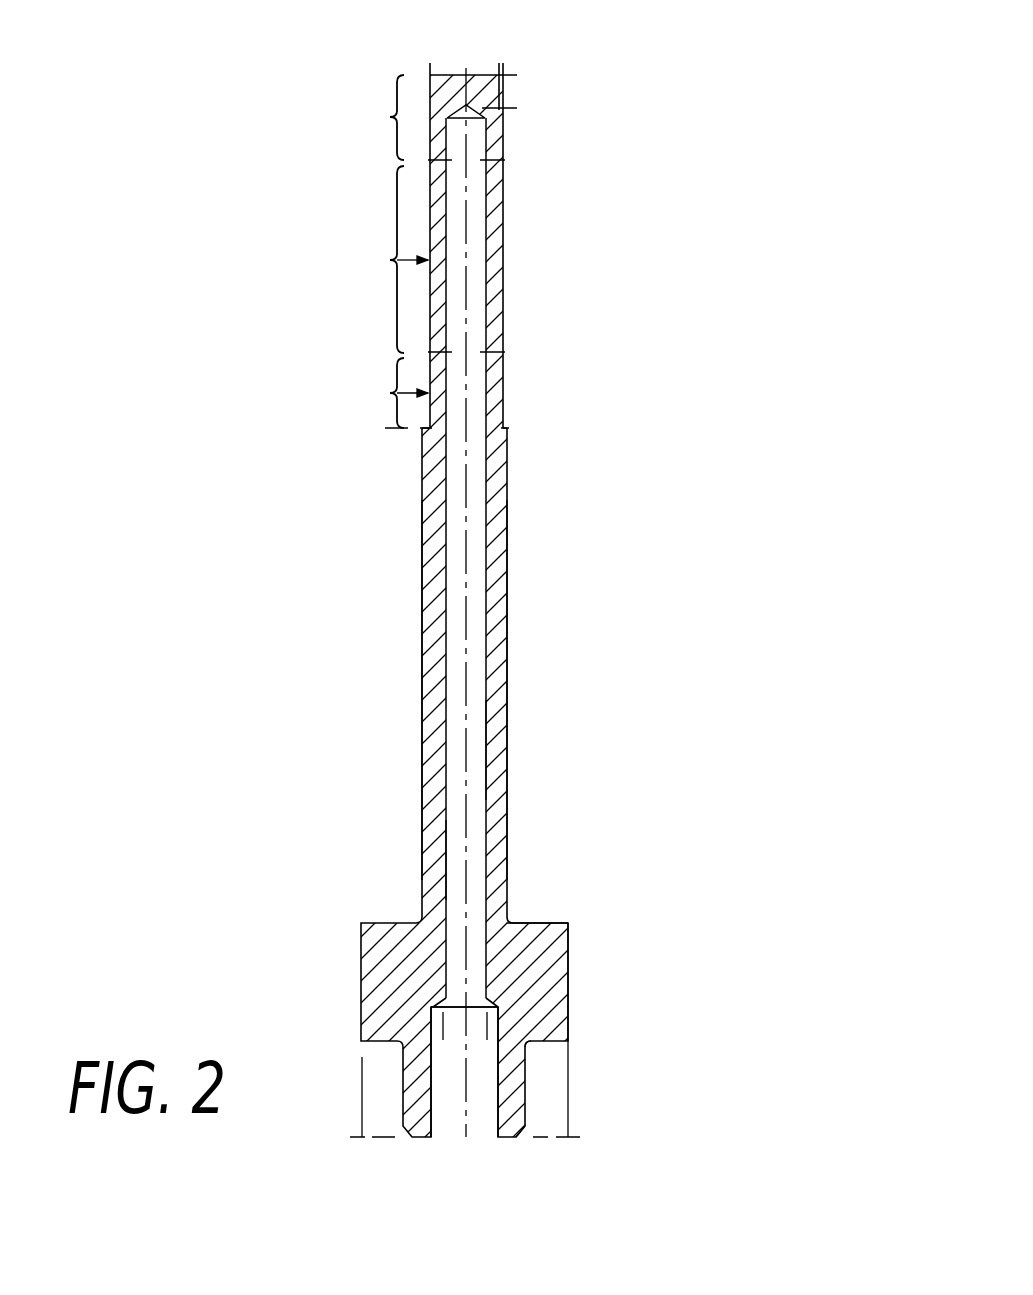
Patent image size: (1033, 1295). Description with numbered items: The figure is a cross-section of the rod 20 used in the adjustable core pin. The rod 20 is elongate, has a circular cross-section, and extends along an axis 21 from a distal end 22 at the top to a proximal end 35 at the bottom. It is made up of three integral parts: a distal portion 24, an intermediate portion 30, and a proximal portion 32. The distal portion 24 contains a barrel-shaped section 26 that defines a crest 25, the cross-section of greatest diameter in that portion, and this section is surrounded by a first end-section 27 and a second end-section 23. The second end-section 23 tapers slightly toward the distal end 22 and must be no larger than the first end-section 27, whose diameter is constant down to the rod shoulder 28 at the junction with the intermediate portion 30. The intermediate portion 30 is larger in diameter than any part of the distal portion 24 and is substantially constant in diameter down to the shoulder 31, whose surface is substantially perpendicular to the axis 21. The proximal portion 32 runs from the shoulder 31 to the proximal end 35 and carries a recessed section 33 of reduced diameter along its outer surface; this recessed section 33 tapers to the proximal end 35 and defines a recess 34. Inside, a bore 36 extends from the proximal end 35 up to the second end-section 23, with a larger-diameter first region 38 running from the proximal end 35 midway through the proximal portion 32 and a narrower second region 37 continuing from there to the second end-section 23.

The rod 20 is at (422, 647).
The axis 21 is at (467, 544).
The distal end 22 is at (478, 75).
The second end-section 23 is at (376, 117).
The distal portion 24 is at (497, 148).
The crest 25 is at (505, 287).
The barrel-shaped section 26 is at (388, 259).
The first end-section 27 is at (389, 393).
The rod shoulder 28 is at (502, 428).
The intermediate portion 30 is at (497, 620).
The shoulder 31 is at (535, 923).
The proximal portion 32 is at (550, 983).
The recessed section 33 is at (527, 1080).
The recess 34 is at (552, 1103).
The proximal end 35 is at (507, 1140).
The bore 36 is at (468, 857).
The second region 37 is at (477, 758).
The first region 38 is at (480, 1120).